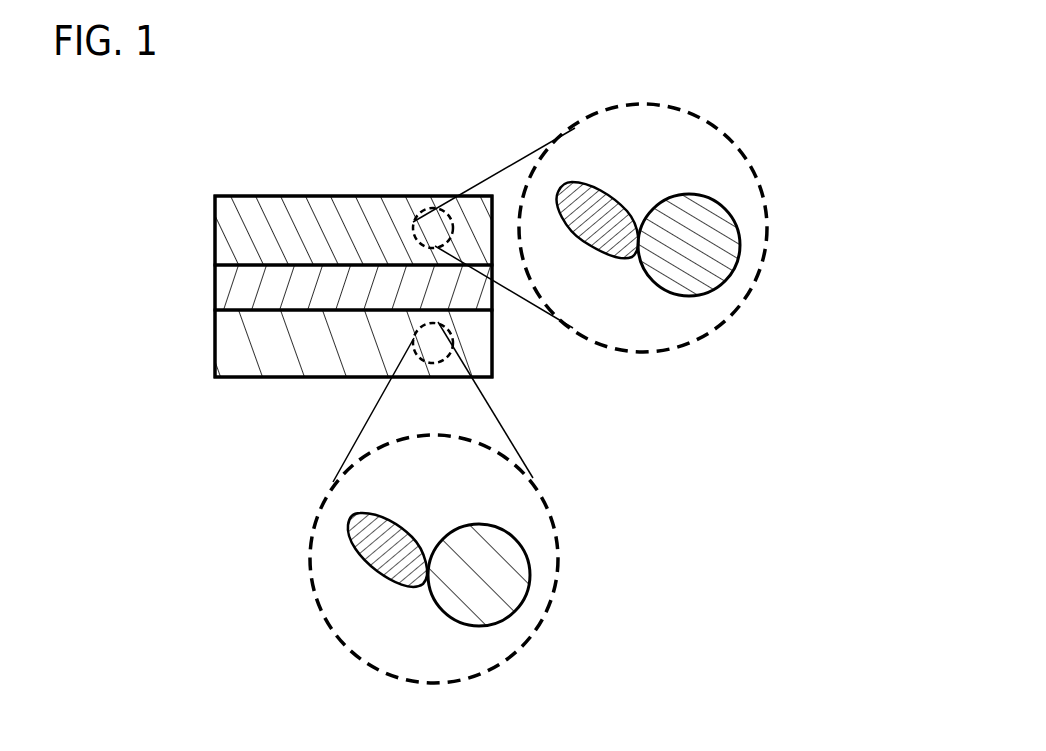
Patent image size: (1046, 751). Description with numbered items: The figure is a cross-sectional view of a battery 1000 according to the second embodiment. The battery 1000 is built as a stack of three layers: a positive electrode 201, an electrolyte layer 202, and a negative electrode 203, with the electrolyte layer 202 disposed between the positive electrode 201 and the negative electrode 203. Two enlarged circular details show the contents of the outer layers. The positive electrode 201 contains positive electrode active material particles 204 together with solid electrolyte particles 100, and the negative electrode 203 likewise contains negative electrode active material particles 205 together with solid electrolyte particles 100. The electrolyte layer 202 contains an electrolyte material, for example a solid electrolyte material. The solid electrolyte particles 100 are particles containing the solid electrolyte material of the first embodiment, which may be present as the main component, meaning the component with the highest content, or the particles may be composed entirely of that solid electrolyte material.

The battery 1000 is at (297, 250).
The positive electrode 201 is at (250, 216).
The electrolyte layer 202 is at (250, 286).
The negative electrode 203 is at (250, 344).
The solid electrolyte particles 100 is at (625, 257).
The positive electrode active material particles 204 is at (713, 247).
The negative electrode active material particles 205 is at (500, 569).